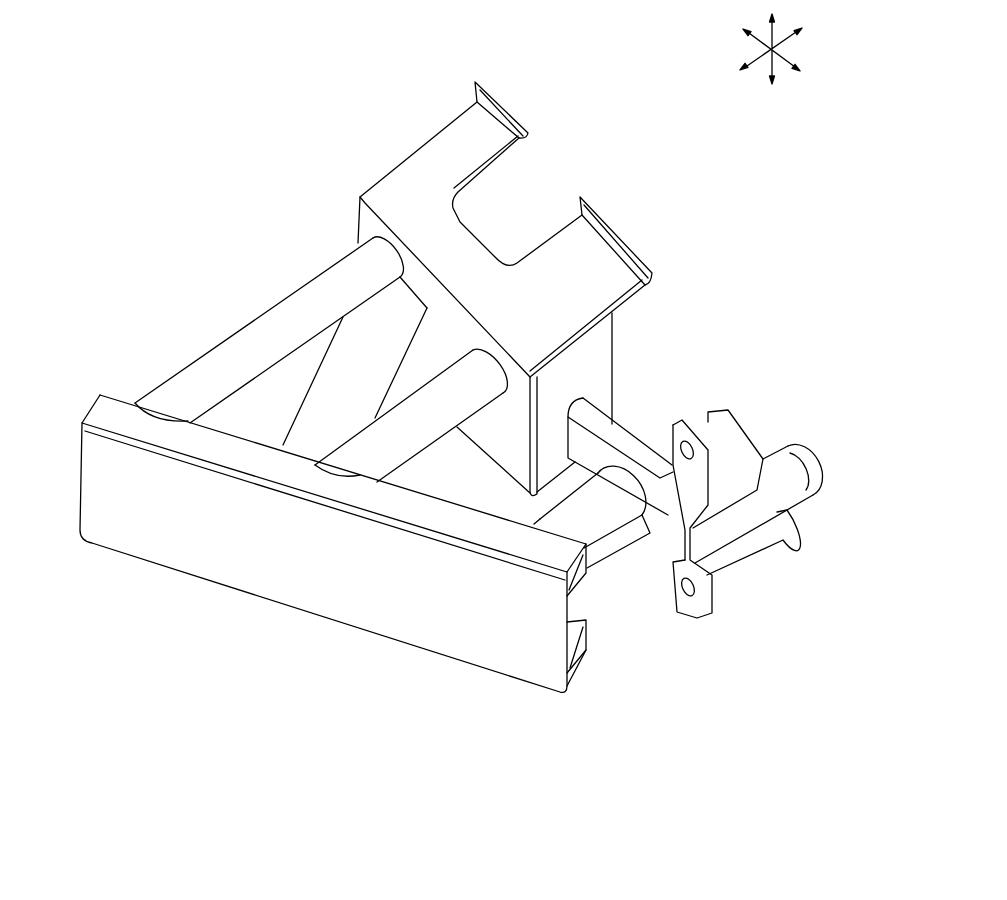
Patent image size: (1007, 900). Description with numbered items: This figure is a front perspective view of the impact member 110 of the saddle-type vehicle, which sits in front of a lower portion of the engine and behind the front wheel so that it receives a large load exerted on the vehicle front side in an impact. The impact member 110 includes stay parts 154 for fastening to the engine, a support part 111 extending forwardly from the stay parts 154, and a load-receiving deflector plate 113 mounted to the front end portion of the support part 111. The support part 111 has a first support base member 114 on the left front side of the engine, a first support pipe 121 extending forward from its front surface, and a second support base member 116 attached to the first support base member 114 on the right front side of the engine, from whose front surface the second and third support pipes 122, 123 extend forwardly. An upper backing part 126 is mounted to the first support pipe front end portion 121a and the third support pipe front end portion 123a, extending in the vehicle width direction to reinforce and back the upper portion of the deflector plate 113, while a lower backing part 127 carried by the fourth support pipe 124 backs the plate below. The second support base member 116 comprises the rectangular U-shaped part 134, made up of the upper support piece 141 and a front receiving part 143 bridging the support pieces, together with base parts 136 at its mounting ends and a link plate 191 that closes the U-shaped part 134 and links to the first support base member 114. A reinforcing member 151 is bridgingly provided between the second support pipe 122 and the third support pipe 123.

The impact member 110 is at (166, 148).
The support part 111 is at (284, 172).
The load-receiving deflector plate 113 is at (374, 580).
The first support base member 114 is at (628, 430).
The second support base member 116 is at (396, 170).
The first support pipe 121 is at (597, 520).
The first support pipe front end portion 121a is at (538, 518).
The second support pipe 122 is at (407, 435).
The third support pipe 123 is at (270, 335).
The third support pipe front end portion 123a is at (134, 402).
The fourth support pipe 124 is at (605, 598).
The upper backing part 126 is at (602, 602).
The lower backing part 127 is at (580, 660).
The U-shaped part 134 is at (384, 178).
The base part 136 is at (476, 98).
The upper support piece 141 is at (437, 157).
The front receiving part 143 is at (371, 226).
The reinforcing member 151 is at (352, 368).
The stay part 154 is at (697, 465).
The link plate 191 is at (593, 375).